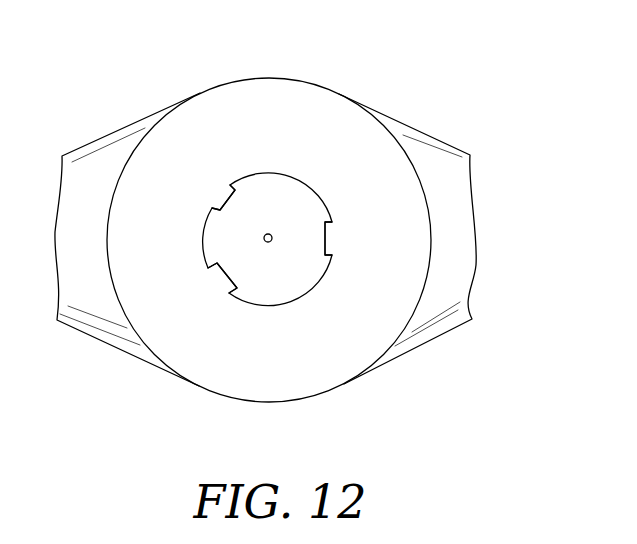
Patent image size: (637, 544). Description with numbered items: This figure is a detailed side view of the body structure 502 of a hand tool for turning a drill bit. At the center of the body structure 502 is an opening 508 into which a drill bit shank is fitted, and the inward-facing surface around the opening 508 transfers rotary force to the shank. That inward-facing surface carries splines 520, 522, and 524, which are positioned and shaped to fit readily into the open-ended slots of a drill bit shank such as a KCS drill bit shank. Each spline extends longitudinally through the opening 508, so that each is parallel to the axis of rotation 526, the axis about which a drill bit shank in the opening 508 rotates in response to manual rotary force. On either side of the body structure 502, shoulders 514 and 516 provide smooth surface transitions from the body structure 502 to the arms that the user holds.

The body structure 502 is at (285, 78).
The opening 508 is at (283, 278).
The shoulder 514 is at (110, 140).
The shoulder 516 is at (430, 140).
The spline 520 is at (335, 238).
The spline 522 is at (218, 200).
The spline 524 is at (218, 282).
The axis of rotation 526 is at (268, 233).